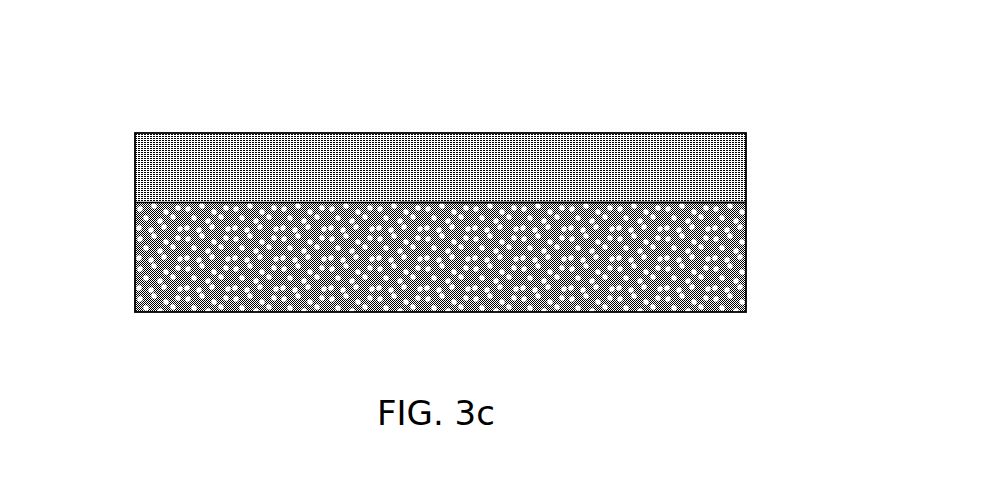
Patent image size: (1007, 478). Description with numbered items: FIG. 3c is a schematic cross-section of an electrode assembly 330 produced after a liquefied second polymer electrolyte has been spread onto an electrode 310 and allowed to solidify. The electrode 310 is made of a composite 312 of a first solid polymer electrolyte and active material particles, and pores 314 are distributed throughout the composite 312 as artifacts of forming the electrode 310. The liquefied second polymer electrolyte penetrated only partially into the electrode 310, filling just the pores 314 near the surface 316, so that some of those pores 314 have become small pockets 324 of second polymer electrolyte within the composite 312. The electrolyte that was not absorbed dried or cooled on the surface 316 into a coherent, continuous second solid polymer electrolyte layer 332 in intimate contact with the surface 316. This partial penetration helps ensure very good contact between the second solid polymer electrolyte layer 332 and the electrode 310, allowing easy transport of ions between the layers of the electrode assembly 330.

The electrode assembly 330 is at (440, 229).
The second solid polymer electrolyte layer 332 is at (527, 169).
The surface 316 is at (682, 197).
The pockets 324 is at (147, 218).
The pores 314 is at (436, 283).
The composite 312 is at (728, 266).
The electrode 310 is at (278, 323).